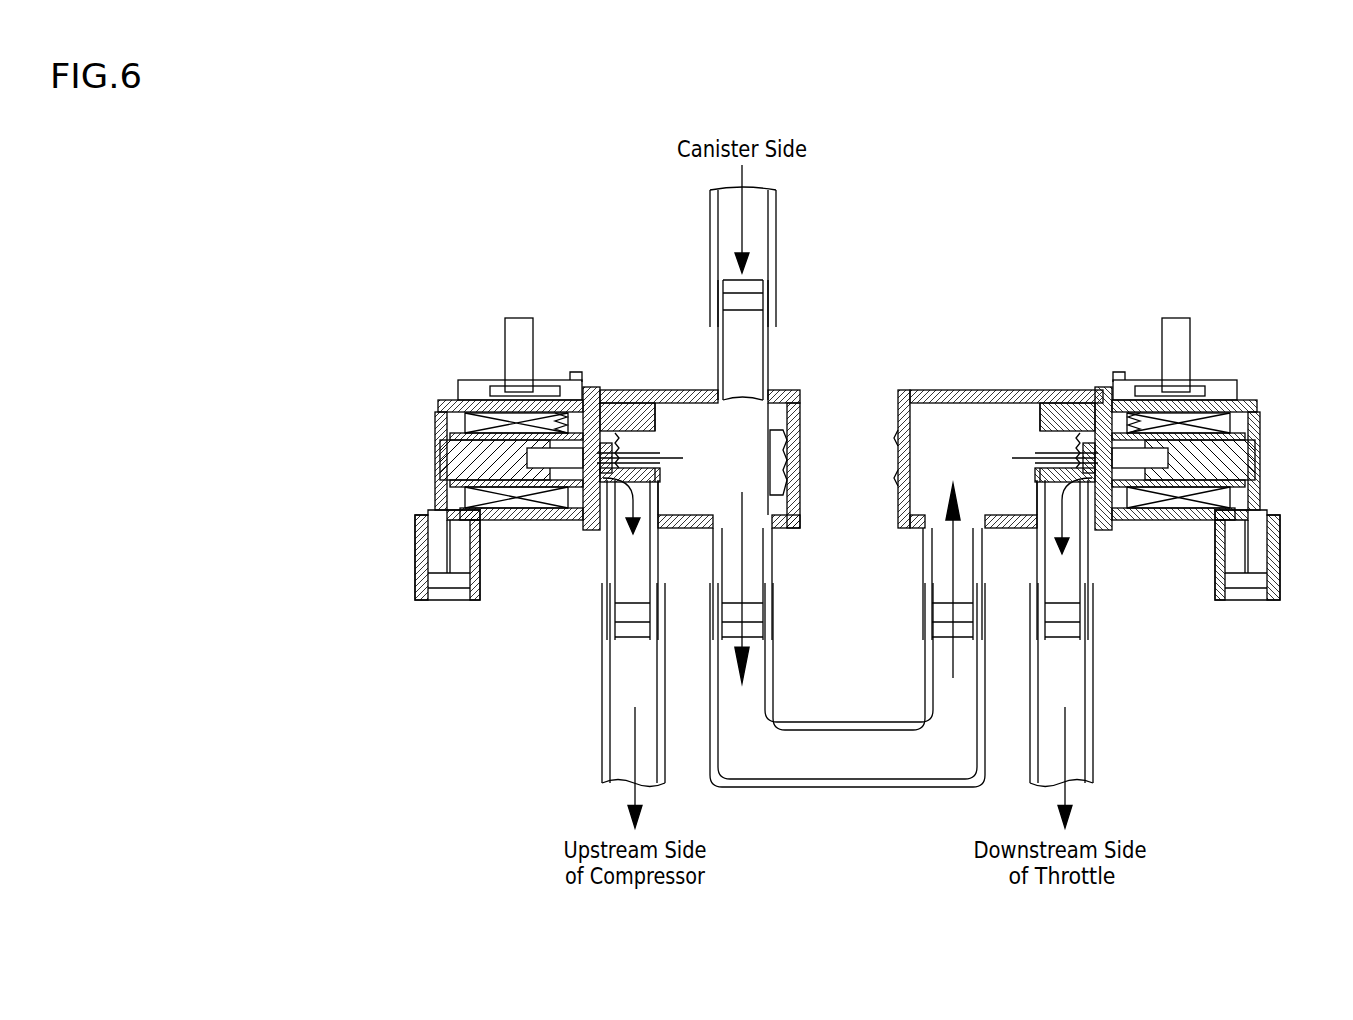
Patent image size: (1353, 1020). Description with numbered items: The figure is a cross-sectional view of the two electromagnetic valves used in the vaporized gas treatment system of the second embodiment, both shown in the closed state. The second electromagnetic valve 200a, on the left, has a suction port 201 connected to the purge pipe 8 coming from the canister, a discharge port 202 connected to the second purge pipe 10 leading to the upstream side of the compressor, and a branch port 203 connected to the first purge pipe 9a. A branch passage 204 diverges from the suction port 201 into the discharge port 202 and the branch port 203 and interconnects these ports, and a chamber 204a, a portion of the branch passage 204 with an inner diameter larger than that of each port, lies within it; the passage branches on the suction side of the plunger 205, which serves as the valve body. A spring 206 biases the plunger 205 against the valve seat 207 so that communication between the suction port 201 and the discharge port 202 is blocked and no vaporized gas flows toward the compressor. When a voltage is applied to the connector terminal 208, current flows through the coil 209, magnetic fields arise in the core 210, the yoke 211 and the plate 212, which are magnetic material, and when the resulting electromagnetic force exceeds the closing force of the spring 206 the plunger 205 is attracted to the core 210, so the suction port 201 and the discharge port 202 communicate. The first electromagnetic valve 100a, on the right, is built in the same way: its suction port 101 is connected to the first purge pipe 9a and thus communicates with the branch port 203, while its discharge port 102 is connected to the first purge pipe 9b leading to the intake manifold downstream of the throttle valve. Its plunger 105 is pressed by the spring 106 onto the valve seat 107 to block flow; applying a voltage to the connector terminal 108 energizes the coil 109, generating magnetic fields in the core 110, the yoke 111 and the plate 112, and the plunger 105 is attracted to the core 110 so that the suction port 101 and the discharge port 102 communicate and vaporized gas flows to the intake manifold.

The purge pipe 8 is at (778, 214).
The first purge pipe 9a is at (862, 728).
The first purge pipe 9b is at (1096, 692).
The second purge pipe 10 is at (603, 675).
The first electromagnetic valve 100a is at (1096, 236).
The suction port 101 is at (924, 570).
The discharge port 102 is at (1094, 566).
The plunger 105 is at (1088, 435).
The spring 106 is at (1125, 440).
The valve seat 107 is at (1055, 445).
The connector terminal 108 is at (1268, 555).
The coil 109 is at (1250, 492).
The core 110 is at (1255, 458).
The yoke 111 is at (1235, 388).
The plate 112 is at (1105, 395).
The second electromagnetic valve 200a is at (580, 236).
The suction port 201 is at (776, 340).
The discharge port 202 is at (607, 568).
The branch port 203 is at (772, 568).
The branch passage 204 is at (802, 484).
The chamber 204a is at (785, 432).
The plunger 205 is at (600, 435).
The spring 206 is at (558, 395).
The valve seat 207 is at (614, 440).
The connector terminal 208 is at (428, 548).
The coil 209 is at (445, 495).
The core 210 is at (440, 455).
The yoke 211 is at (460, 388).
The plate 212 is at (592, 523).